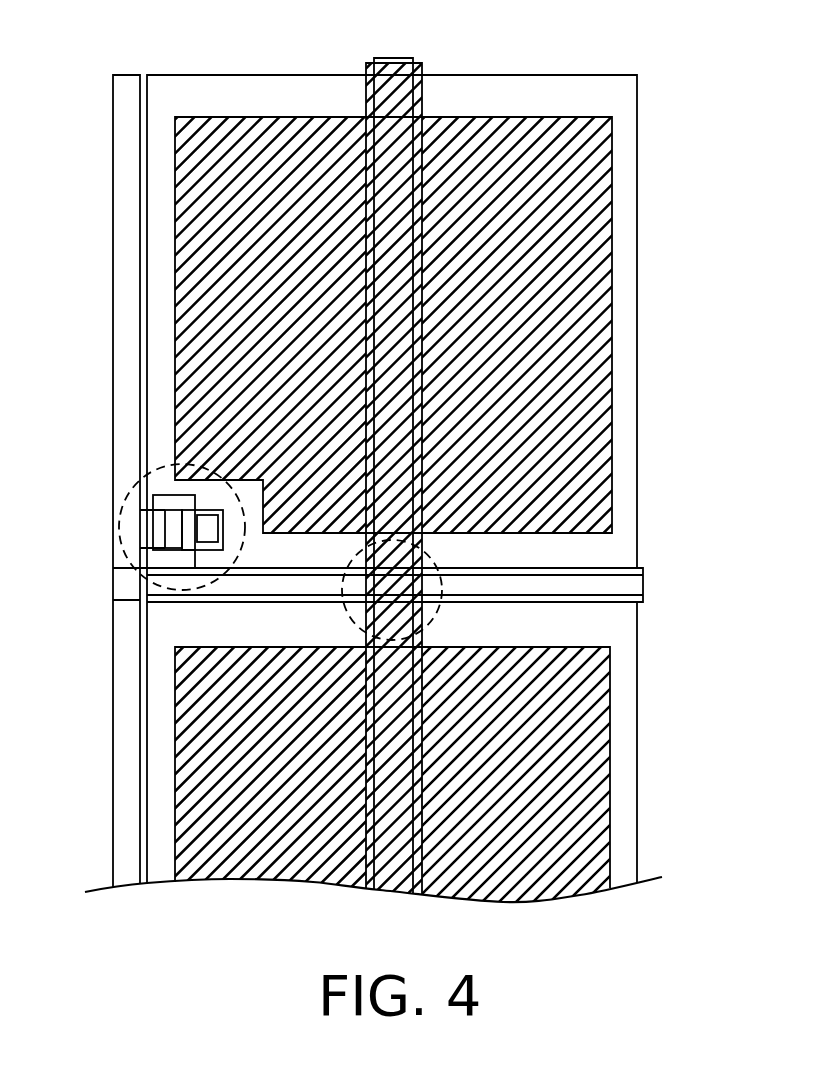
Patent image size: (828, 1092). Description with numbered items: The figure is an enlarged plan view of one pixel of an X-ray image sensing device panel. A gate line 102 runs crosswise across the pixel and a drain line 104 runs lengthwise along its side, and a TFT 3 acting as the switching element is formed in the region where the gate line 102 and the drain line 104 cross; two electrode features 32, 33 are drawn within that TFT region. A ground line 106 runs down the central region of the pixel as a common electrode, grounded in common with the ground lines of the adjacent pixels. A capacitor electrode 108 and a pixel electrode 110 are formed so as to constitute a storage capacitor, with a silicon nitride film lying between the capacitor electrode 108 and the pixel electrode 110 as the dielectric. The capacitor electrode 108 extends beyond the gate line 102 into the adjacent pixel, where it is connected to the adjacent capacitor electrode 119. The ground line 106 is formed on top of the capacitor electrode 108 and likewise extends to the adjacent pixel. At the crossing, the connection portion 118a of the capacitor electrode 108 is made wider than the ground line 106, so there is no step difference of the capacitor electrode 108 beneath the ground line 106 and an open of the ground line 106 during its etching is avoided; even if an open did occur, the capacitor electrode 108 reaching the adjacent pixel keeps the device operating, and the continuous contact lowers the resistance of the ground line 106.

The drain line 104 is at (112, 264).
The pixel electrode 110 is at (639, 152).
The capacitor electrode 108 is at (613, 252).
The adjacent capacitor electrode 119 is at (612, 786).
The ground line 106 is at (421, 88).
The gate line 102 is at (642, 588).
The connection portion 118a is at (432, 554).
The TFT 3 is at (123, 550).
The source electrode 32 is at (160, 533).
The drain electrode 33 is at (188, 518).